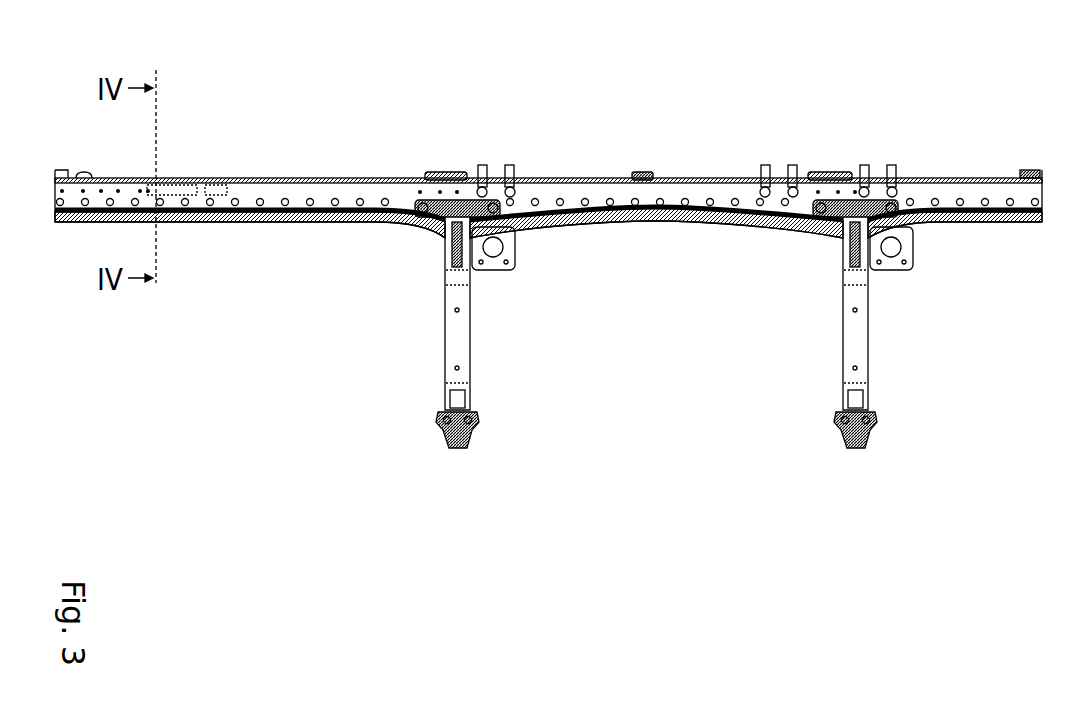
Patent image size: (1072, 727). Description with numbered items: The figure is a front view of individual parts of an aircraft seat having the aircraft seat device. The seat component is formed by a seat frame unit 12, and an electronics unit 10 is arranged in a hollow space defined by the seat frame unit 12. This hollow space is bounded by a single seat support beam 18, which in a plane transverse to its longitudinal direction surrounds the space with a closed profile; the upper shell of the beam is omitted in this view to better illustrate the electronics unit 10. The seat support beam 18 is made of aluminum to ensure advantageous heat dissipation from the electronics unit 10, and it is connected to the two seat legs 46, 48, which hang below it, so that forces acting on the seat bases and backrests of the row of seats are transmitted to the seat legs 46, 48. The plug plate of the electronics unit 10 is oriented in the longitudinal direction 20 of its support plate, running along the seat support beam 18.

The electronics unit 10 is at (548, 305).
The seat frame unit 12 is at (335, 167).
The seat support beam 18 is at (245, 178).
The longitudinal direction 20 is at (188, 225).
The seat leg 46 is at (460, 460).
The seat leg 48 is at (853, 460).